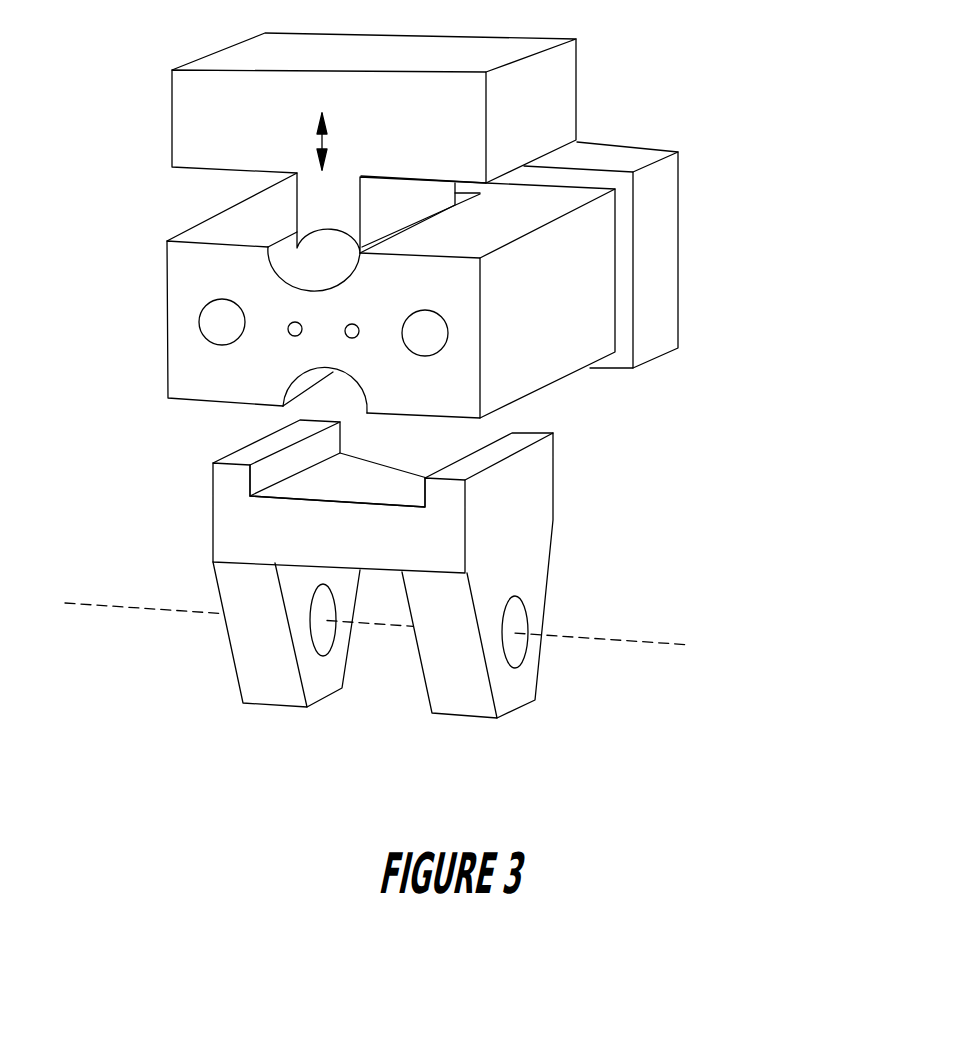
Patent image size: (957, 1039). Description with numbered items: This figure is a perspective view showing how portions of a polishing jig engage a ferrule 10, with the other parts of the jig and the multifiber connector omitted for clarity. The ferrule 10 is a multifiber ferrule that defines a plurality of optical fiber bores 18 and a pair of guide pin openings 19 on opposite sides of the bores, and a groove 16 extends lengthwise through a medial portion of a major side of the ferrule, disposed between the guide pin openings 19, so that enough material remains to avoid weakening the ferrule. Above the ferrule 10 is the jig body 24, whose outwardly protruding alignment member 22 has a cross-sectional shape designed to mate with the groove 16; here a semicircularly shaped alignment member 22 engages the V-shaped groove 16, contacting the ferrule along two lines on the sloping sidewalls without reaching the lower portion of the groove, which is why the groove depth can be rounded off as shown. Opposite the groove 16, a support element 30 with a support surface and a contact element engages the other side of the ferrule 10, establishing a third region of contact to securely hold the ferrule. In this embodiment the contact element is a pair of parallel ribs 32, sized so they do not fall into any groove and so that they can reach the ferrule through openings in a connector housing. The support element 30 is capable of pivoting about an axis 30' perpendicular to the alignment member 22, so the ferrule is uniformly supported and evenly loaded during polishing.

The ferrule 10 is at (547, 205).
The groove 16 is at (280, 293).
The optical fiber bores 18 is at (360, 328).
The guide pin openings 19 is at (435, 333).
The alignment member 22 is at (317, 230).
The jig body 24 is at (557, 103).
The support element 30 is at (427, 569).
The axis 30' is at (427, 614).
The ribs 32 is at (533, 476).